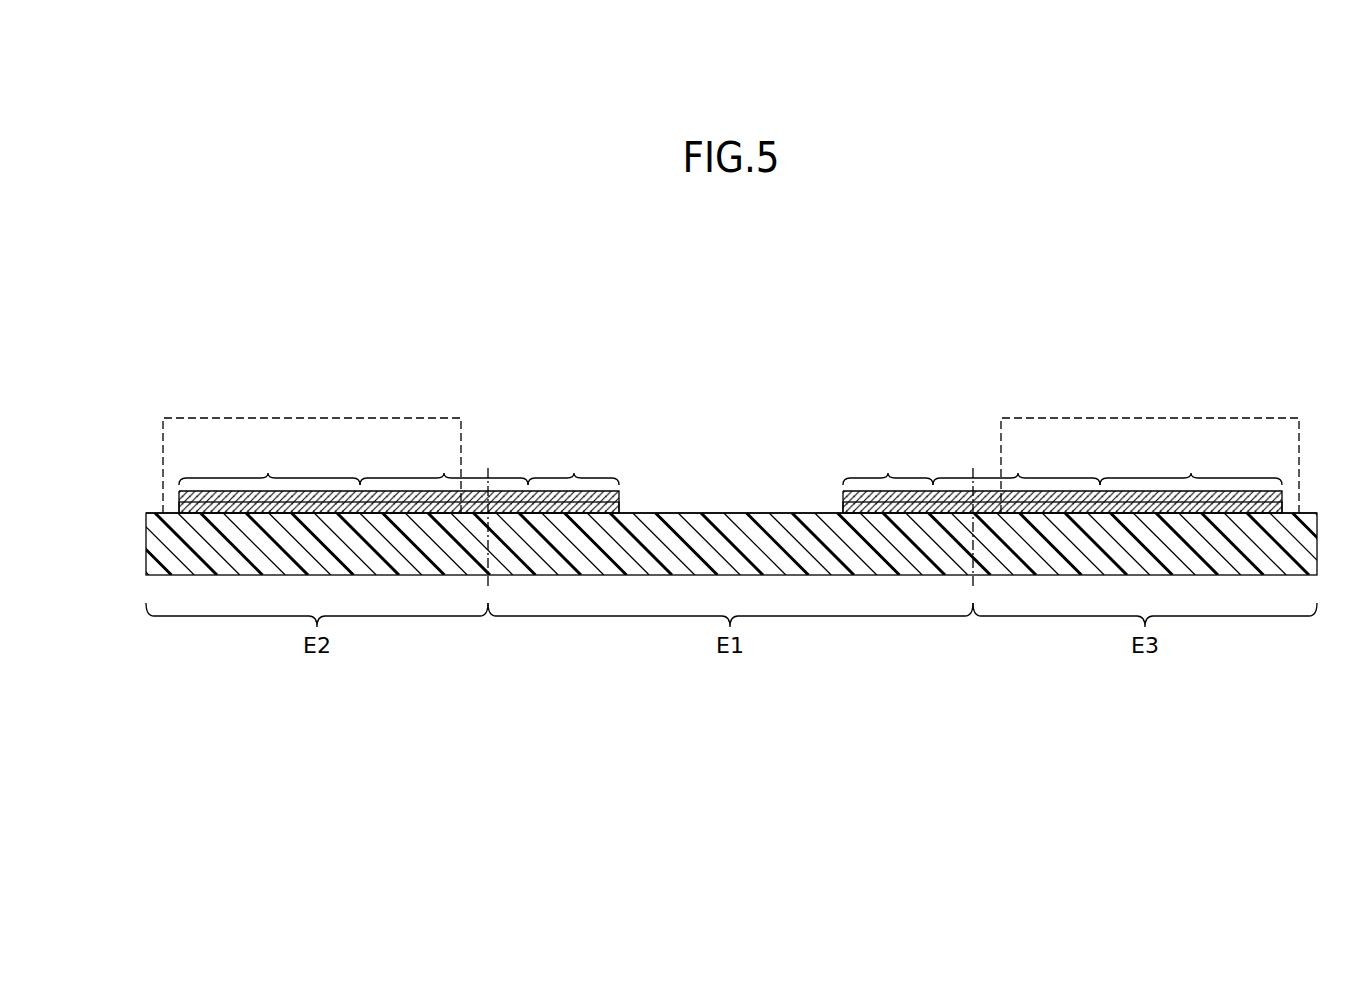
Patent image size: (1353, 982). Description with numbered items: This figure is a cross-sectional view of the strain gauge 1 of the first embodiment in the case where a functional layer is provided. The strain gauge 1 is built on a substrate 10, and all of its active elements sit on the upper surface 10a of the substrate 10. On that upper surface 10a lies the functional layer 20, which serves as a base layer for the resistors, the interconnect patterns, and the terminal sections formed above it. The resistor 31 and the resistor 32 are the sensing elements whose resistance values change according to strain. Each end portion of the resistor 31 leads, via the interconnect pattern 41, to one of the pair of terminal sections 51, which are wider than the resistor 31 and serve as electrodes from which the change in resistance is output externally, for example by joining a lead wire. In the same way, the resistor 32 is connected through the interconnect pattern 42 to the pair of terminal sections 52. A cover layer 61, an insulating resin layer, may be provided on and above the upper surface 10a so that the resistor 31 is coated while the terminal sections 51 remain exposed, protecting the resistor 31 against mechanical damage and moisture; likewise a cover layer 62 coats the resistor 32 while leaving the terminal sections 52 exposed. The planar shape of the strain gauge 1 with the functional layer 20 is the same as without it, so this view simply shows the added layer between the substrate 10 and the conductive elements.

The strain gauge 1 is at (105, 309).
The substrate 10 is at (156, 546).
The upper surface of the substrate 10a is at (147, 513).
The functional layer 20 is at (181, 509).
The resistor 31 is at (268, 473).
The resistor 32 is at (1191, 473).
The interconnect pattern 41 is at (444, 473).
The interconnect pattern 42 is at (1018, 473).
The terminal sections 51 is at (574, 473).
The terminal sections 52 is at (888, 473).
The cover layer 61 is at (352, 418).
The cover layer 62 is at (1105, 418).